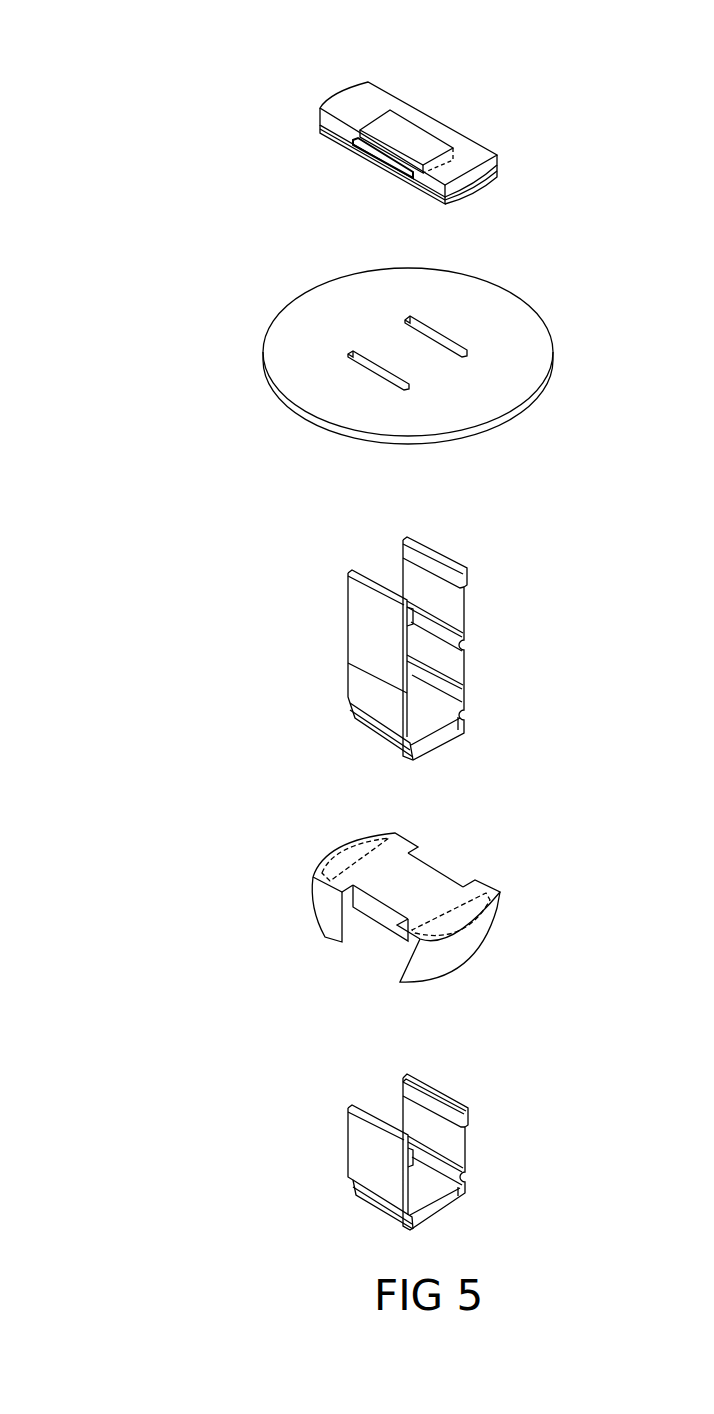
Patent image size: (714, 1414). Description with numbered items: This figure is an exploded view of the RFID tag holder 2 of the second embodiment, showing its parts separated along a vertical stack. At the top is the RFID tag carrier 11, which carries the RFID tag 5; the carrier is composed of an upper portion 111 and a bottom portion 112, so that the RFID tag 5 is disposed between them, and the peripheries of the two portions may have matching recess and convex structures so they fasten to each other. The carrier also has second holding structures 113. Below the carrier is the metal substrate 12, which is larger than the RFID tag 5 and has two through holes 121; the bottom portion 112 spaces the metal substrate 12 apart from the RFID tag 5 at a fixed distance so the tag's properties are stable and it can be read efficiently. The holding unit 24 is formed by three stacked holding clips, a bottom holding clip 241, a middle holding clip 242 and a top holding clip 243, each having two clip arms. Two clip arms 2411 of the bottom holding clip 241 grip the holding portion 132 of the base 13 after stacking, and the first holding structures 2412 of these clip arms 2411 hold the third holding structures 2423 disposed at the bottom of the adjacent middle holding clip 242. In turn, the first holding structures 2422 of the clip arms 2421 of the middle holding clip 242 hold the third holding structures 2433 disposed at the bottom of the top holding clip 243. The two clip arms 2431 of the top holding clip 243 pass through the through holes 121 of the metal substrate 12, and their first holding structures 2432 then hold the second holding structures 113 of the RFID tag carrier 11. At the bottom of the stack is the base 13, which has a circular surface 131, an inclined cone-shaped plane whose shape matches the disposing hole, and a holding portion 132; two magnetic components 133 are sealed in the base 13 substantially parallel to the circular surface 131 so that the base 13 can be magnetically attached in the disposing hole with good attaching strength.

The RFID tag holder 2 is at (137, 76).
The RFID tag 5 is at (416, 135).
The RFID tag carrier 11 is at (205, 97).
The upper portion 111 is at (327, 125).
The bottom portion 112 is at (324, 133).
The second holding structure 113 is at (362, 157).
The metal substrate 12 is at (512, 420).
The through hole 121 is at (438, 335).
The holding unit 24 is at (490, 563).
The bottom holding clip 241 is at (467, 1110).
The clip arm 2411 is at (367, 1160).
The first holding structure 2412 is at (403, 1090).
The middle holding clip 242 is at (466, 673).
The clip arm 2421 is at (358, 652).
The first holding structure 2422 is at (412, 677).
The third holding structure 2423 is at (383, 737).
The top holding clip 243 is at (466, 611).
The clip arm 2431 is at (355, 605).
The first holding structure 2432 is at (403, 557).
The third holding structure 2433 is at (382, 710).
The base 13 is at (447, 860).
The circular surface 131 is at (447, 955).
The holding portion 132 is at (392, 917).
The magnetic component 133 is at (357, 855).